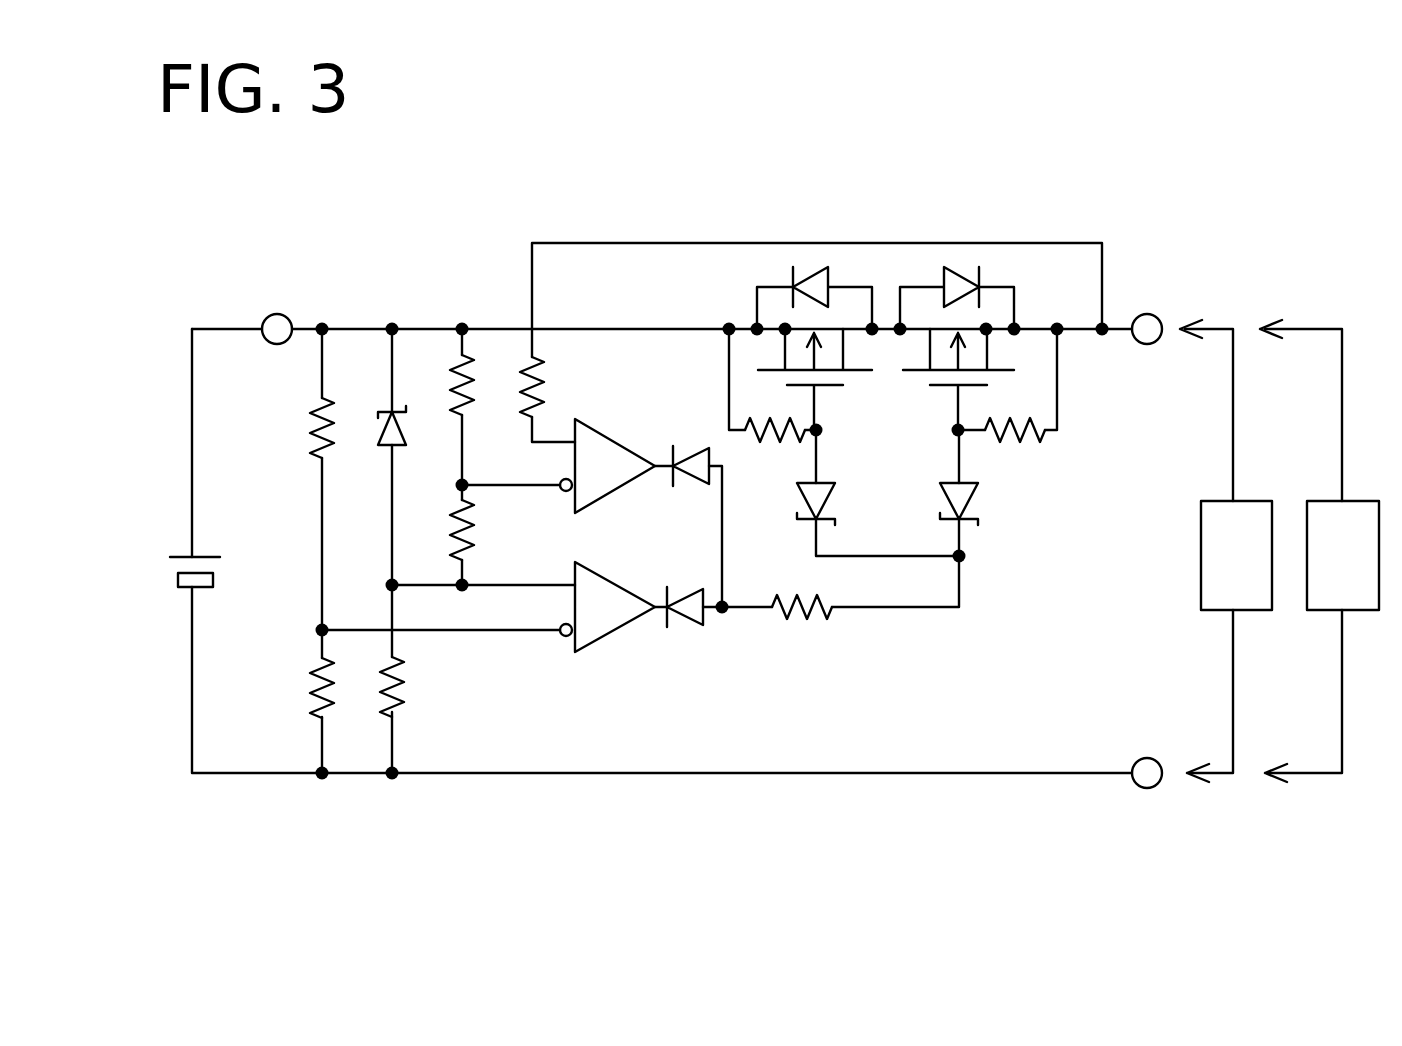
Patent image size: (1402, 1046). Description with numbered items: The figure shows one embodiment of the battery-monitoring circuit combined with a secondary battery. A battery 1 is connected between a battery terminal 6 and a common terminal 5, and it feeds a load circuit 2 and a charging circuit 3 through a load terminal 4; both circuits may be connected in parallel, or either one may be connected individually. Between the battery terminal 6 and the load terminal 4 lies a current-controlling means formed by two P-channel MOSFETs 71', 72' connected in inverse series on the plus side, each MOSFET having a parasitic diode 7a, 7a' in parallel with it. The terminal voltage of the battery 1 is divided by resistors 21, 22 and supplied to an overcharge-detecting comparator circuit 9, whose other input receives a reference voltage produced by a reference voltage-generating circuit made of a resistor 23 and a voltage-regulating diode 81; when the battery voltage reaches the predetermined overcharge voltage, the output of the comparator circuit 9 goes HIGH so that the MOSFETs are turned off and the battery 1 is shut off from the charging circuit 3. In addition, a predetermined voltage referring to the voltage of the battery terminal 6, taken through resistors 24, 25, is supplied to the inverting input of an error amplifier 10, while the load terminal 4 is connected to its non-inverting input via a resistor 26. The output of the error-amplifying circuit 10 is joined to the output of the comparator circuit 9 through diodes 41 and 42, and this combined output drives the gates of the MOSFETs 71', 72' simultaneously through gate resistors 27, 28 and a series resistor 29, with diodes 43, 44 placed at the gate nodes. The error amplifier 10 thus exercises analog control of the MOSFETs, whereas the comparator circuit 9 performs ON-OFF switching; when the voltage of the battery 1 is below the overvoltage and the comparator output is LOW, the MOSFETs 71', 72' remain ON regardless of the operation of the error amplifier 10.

The battery 1 is at (182, 555).
The load circuit 2 is at (1236, 555).
The charging circuit 3 is at (1343, 555).
The load terminal 4 is at (1150, 317).
The common terminal 5 is at (1150, 790).
The battery terminal 6 is at (283, 316).
The parasitic diode of switching element 71' 7a is at (814, 263).
The parasitic diode of switching element 72' 7a' is at (957, 263).
The overcharge-detecting comparator circuit 9 is at (607, 607).
The error amplifier 10 is at (607, 466).
The resistor 21 is at (307, 427).
The resistor 22 is at (308, 683).
The resistor 23 is at (408, 688).
The resistor 24 is at (457, 382).
The resistor 25 is at (478, 538).
The resistor 26 is at (545, 391).
The gate resistor 27 is at (776, 455).
The gate resistor 28 is at (1030, 445).
The resistor 29 is at (800, 628).
The diode 41 is at (696, 452).
The diode 42 is at (688, 622).
The zener diode 43 is at (826, 497).
The zener diode 44 is at (968, 497).
The MOSFET 71' is at (820, 387).
The MOSFET 72' is at (957, 387).
The voltage-regulating diode 81 is at (387, 437).